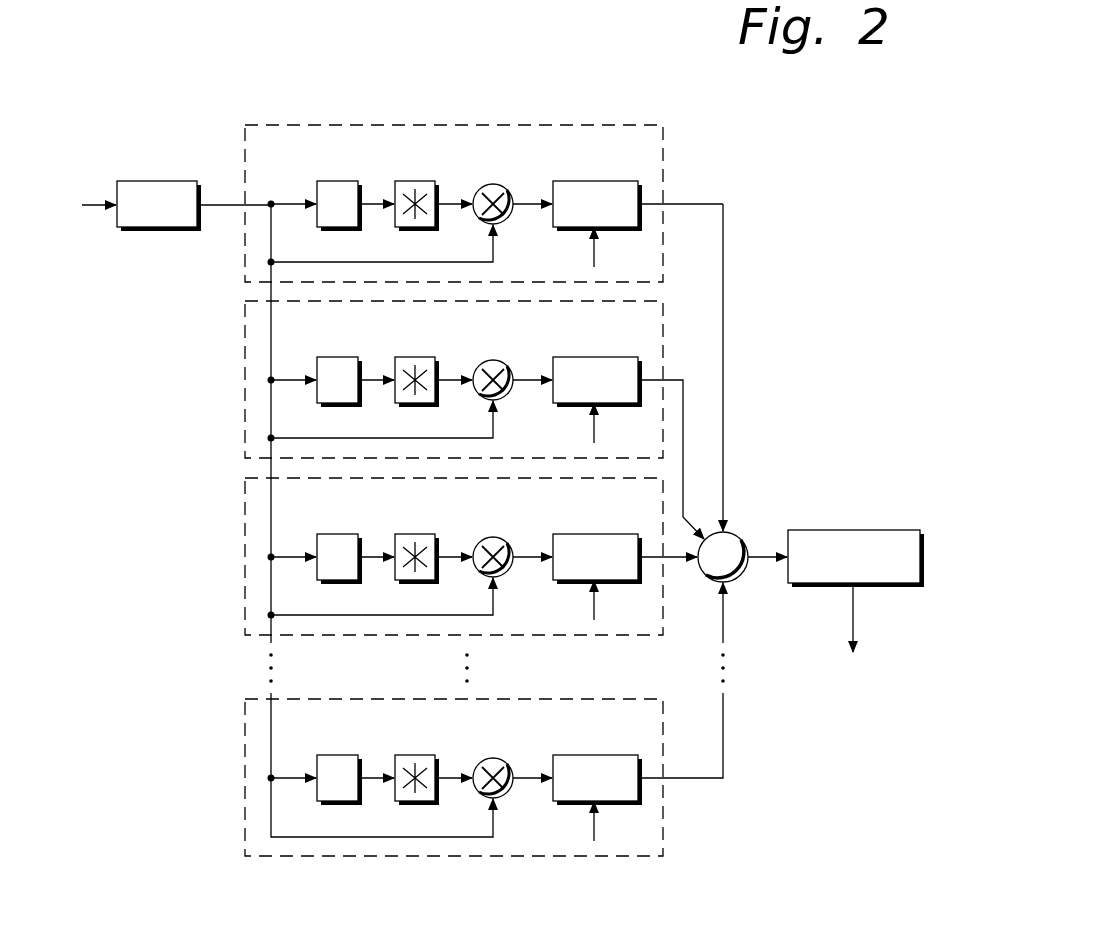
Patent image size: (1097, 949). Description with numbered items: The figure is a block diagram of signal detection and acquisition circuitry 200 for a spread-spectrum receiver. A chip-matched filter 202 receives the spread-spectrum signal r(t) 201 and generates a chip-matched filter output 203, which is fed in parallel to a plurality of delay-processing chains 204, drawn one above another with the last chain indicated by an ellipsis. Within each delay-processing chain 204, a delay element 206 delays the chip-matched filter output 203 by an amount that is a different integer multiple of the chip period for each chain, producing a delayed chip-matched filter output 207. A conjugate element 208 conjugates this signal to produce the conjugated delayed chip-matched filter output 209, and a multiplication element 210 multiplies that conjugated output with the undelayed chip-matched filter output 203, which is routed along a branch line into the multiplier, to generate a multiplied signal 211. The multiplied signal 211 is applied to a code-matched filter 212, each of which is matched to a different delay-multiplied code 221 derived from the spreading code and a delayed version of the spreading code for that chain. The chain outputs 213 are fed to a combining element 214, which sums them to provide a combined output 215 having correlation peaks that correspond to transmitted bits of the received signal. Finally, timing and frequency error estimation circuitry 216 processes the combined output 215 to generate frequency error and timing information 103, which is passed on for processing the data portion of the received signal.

The signal detection and acquisition circuitry 200 is at (773, 135).
The spread-spectrum signal r(t) 201 is at (105, 200).
The chip-matched filter 202 is at (153, 231).
The chip-matched filter output 203 is at (244, 202).
The delay-processing chain 204 is at (663, 148).
The delay element 206 is at (331, 181).
The delayed chip-matched filter output 207 is at (367, 200).
The conjugate element 208 is at (412, 181).
The conjugated delayed chip-matched filter output 209 is at (456, 201).
The multiplication element 210 is at (493, 183).
The multiplied signal 211 is at (535, 201).
The code-matched filter 212 is at (605, 181).
The branch output signal 213 is at (705, 204).
The combining element 214 is at (745, 583).
The combined output 215 is at (768, 550).
The timing and frequency error estimation circuitry 216 is at (858, 530).
The frequency error and timing information 103 is at (851, 614).
The delay-multiplied code 221 is at (594, 255).